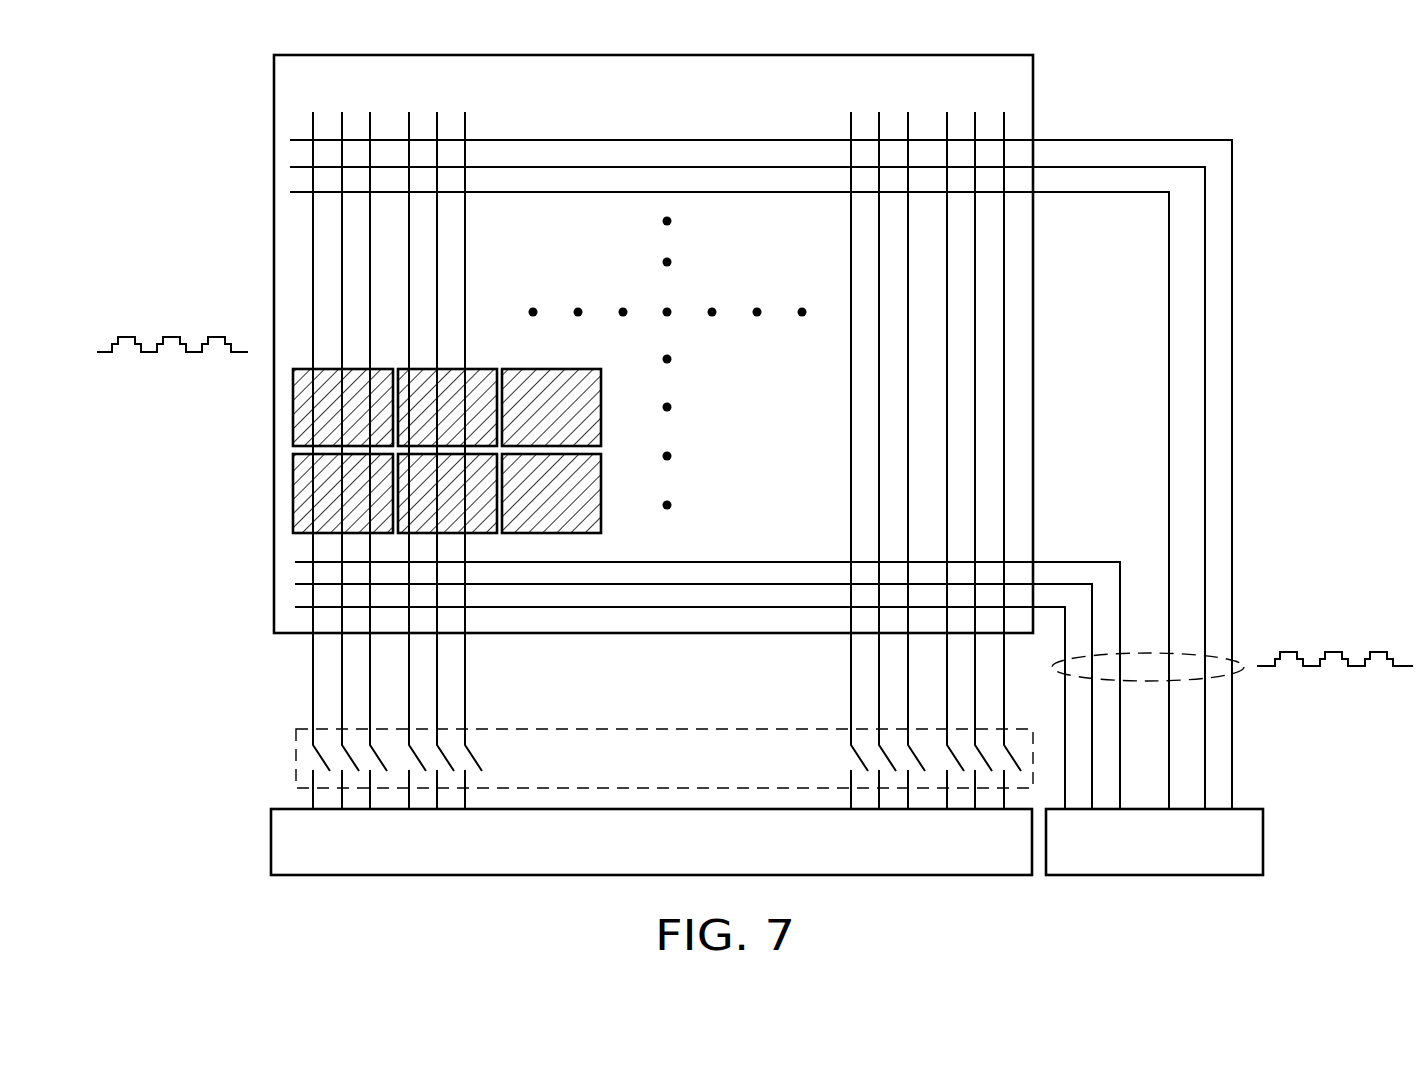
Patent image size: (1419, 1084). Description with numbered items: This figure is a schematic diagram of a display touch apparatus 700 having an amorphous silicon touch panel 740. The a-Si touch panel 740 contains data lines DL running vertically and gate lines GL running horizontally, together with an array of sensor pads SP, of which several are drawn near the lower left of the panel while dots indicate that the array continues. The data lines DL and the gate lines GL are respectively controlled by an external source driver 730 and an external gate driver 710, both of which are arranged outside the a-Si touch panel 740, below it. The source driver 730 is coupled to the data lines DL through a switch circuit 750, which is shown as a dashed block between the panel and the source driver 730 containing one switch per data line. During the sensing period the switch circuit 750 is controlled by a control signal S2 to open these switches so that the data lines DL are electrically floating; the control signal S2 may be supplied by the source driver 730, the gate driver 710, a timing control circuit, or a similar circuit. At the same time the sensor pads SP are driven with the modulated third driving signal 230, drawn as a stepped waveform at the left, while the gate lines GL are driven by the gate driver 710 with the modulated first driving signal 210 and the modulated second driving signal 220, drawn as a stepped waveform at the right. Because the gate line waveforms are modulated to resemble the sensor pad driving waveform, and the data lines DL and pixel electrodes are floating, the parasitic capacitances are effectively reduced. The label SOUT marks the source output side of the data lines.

The a-Si touch panel 740 is at (1033, 93).
The gate lines GL is at (284, 119).
The data lines DL is at (660, 460).
The source output SOUT is at (258, 669).
The sensor pads SP is at (293, 517).
The modulated third driving signal 230 is at (294, 490).
The switch circuit 750 is at (290, 730).
The control signal S2 is at (296, 758).
The modulated first driving signal 210 is at (1233, 681).
The modulated second driving signal 220 is at (1233, 681).
The source driver 730 is at (931, 877).
The gate driver 710 is at (1155, 877).
The display touch apparatus 700 is at (1370, 908).